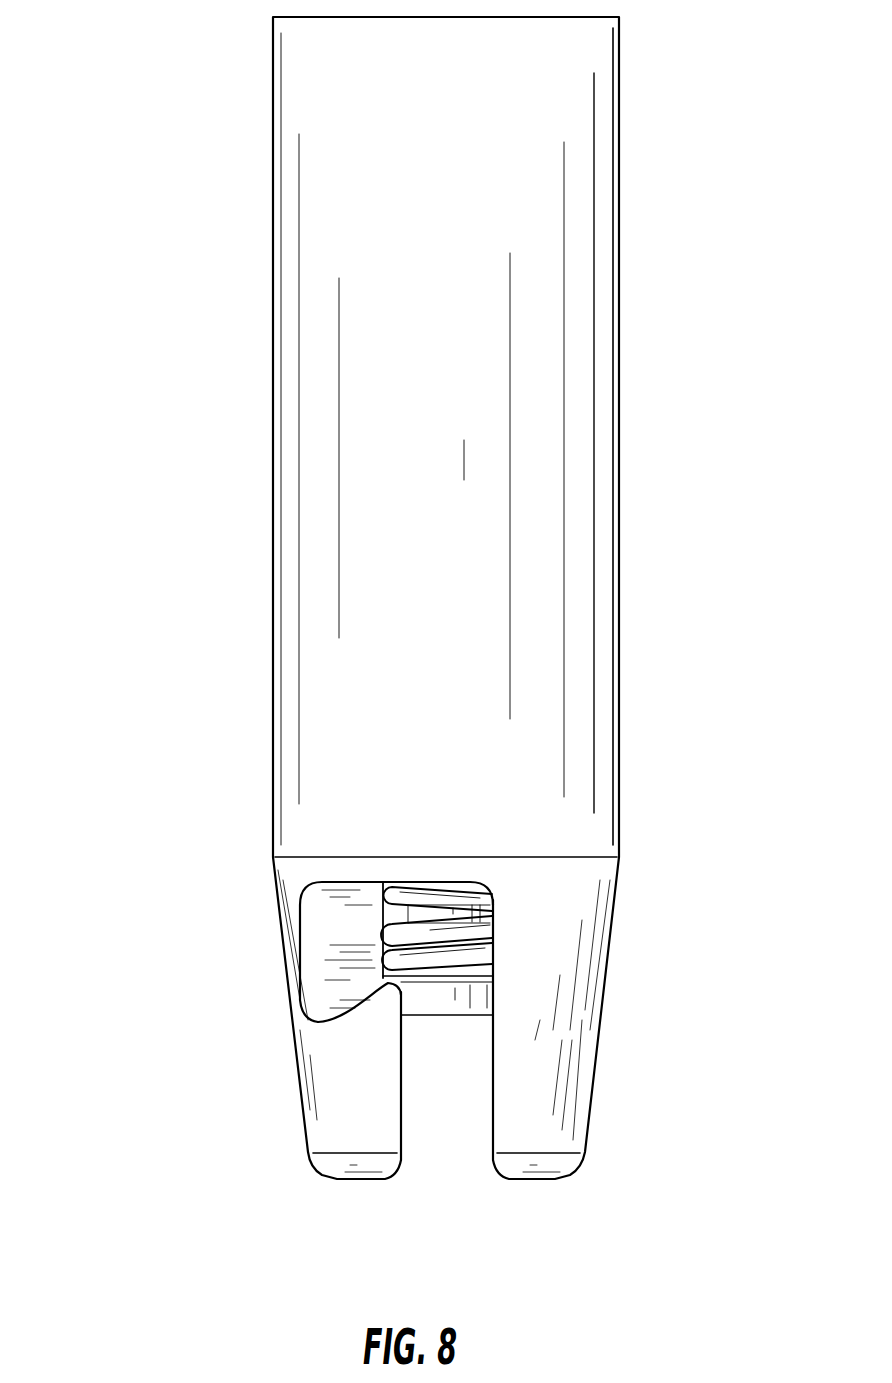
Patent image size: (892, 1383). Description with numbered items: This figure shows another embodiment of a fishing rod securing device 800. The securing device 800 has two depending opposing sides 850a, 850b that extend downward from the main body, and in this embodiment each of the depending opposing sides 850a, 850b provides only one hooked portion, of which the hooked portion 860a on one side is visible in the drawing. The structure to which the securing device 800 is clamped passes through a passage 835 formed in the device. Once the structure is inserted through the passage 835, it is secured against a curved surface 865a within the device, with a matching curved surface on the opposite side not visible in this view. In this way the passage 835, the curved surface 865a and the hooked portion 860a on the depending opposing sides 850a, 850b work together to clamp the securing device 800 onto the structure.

The securing device 800 is at (725, 330).
The passage 835 is at (330, 930).
The curved surface 865a is at (305, 1022).
The hooked portion 860a is at (384, 998).
The depending opposing side 850a is at (290, 1108).
The depending opposing side 850b is at (616, 1004).